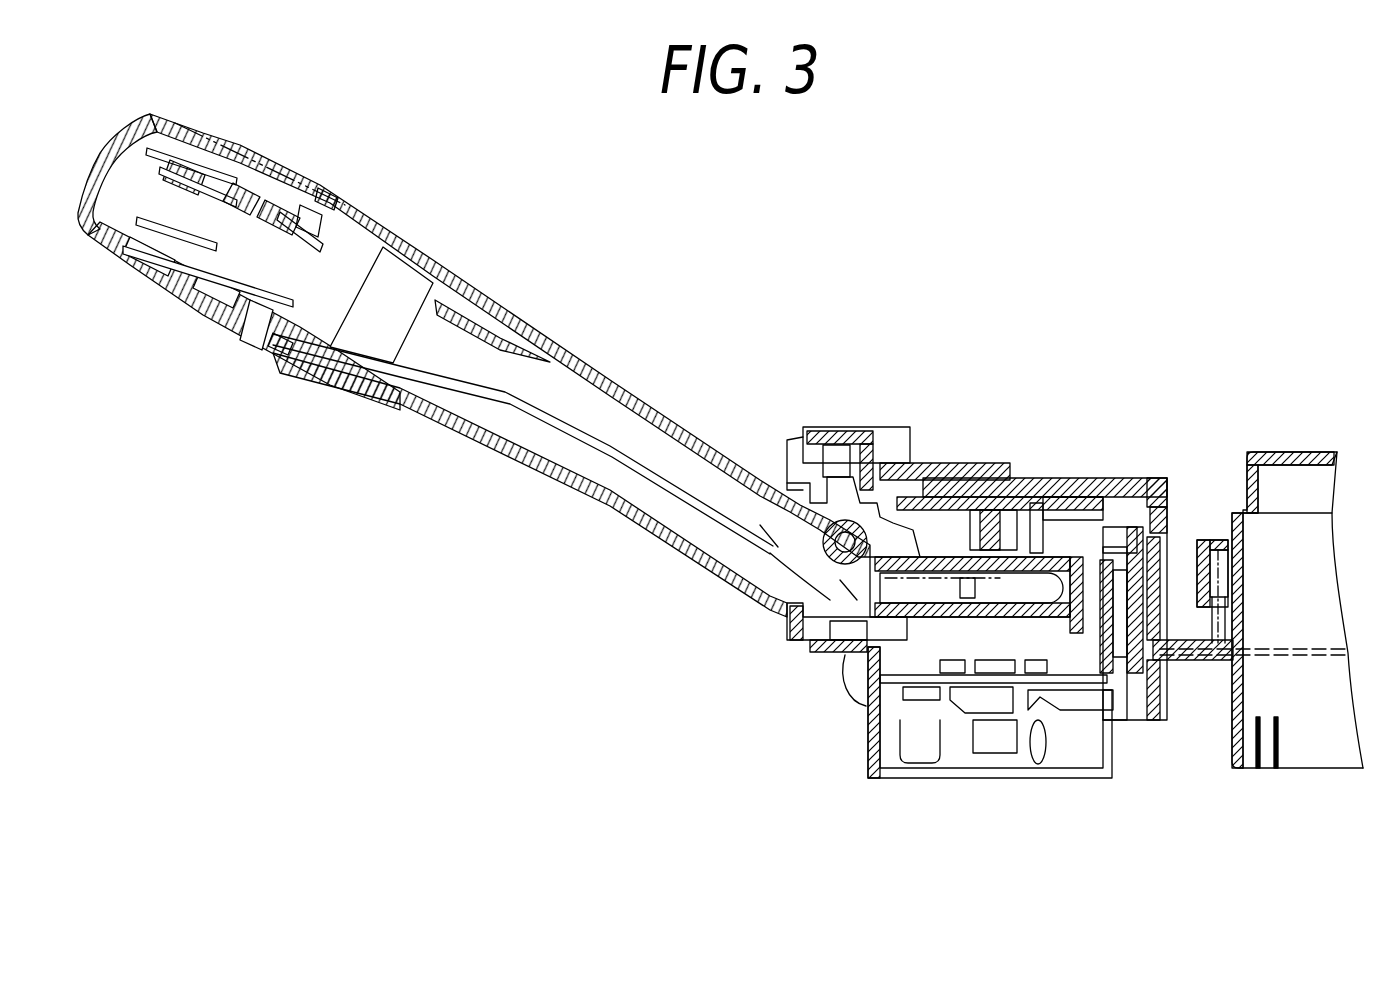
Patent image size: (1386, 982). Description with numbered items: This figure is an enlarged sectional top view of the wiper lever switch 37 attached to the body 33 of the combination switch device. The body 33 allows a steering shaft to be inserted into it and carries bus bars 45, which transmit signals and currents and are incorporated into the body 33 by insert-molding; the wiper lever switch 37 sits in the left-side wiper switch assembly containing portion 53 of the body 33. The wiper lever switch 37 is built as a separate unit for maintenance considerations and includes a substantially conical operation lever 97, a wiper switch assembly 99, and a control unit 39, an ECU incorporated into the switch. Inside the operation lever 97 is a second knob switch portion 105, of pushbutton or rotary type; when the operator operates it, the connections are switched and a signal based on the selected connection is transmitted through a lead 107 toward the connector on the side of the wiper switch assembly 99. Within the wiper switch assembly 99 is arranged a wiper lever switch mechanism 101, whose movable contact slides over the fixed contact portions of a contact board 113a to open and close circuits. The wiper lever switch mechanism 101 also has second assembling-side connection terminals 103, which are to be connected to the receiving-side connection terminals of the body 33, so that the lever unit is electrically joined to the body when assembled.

The body 33 is at (1274, 452).
The wiper lever switch 37 is at (806, 340).
The control unit 39 is at (995, 718).
The bus bars 45 is at (1298, 650).
The left-side wiper switch assembly containing portion 53 is at (967, 470).
The operation lever 97 is at (76, 232).
The wiper switch assembly 99 is at (1043, 478).
The wiper lever switch mechanism 101 is at (925, 657).
The second assembling-side connection terminals 103 is at (1078, 717).
The second knob switch portion 105 is at (227, 317).
The lead 107 is at (840, 670).
The contact board 113a is at (940, 687).